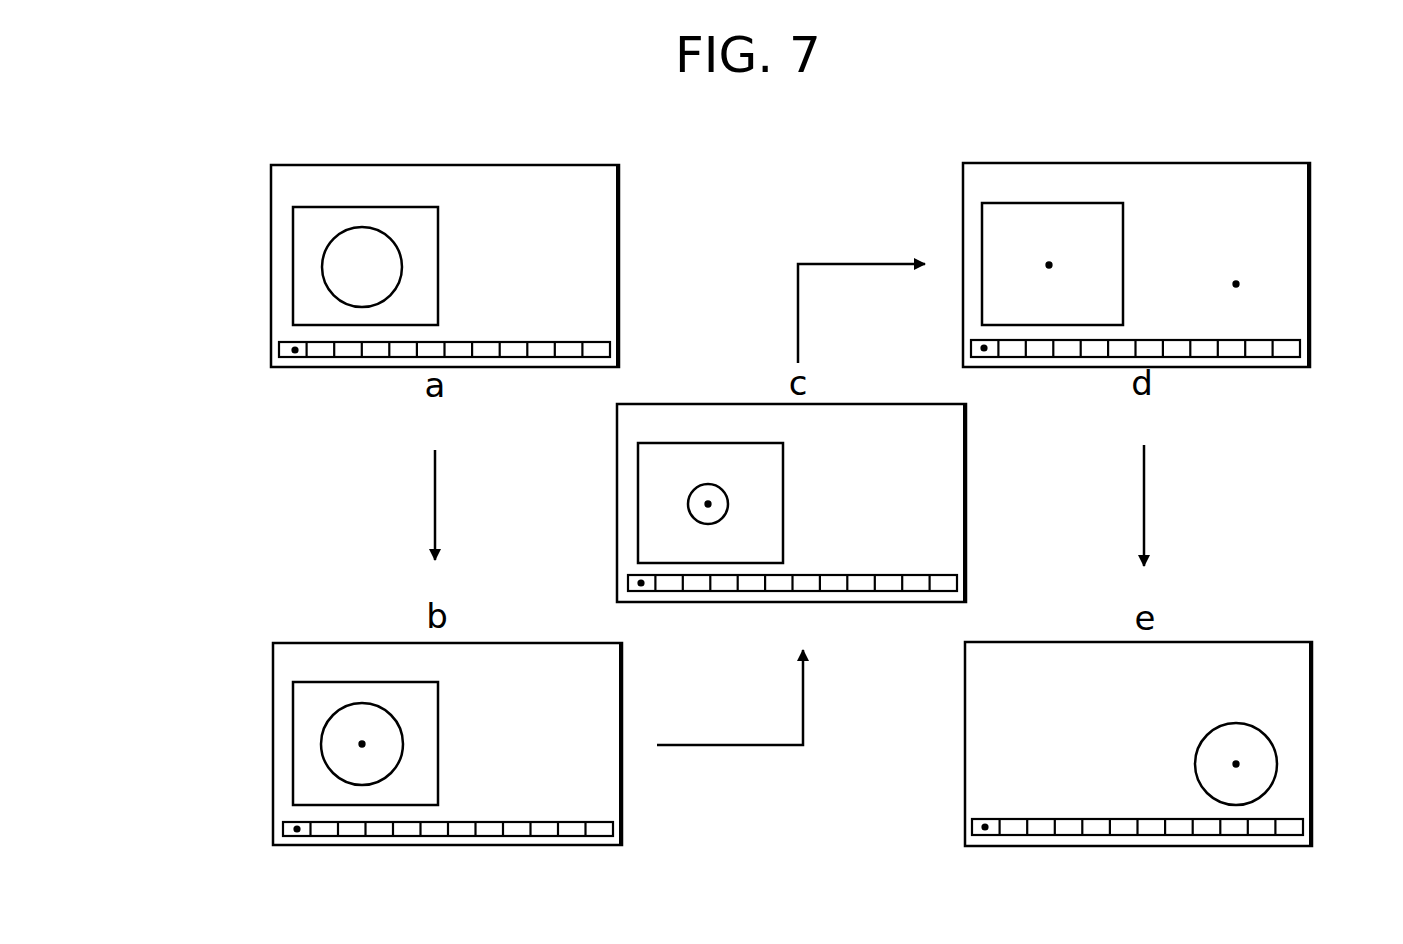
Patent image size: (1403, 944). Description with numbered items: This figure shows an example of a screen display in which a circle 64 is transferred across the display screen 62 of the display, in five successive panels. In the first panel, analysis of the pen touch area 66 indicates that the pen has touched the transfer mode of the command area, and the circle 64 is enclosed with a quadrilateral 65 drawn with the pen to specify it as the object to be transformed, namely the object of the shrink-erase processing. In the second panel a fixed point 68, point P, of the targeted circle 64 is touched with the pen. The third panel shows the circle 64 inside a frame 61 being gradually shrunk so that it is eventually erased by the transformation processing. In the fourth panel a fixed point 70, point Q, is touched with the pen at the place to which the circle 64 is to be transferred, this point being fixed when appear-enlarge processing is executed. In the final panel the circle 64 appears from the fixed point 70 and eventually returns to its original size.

The window frame 61 is at (770, 497).
The display screen 62 is at (600, 191).
The circle 64 is at (322, 270).
The quadrilateral 65 is at (303, 224).
The pen touch area 66 is at (601, 349).
The fixed point 68 is at (362, 744).
The fixed point 70 is at (1236, 284).